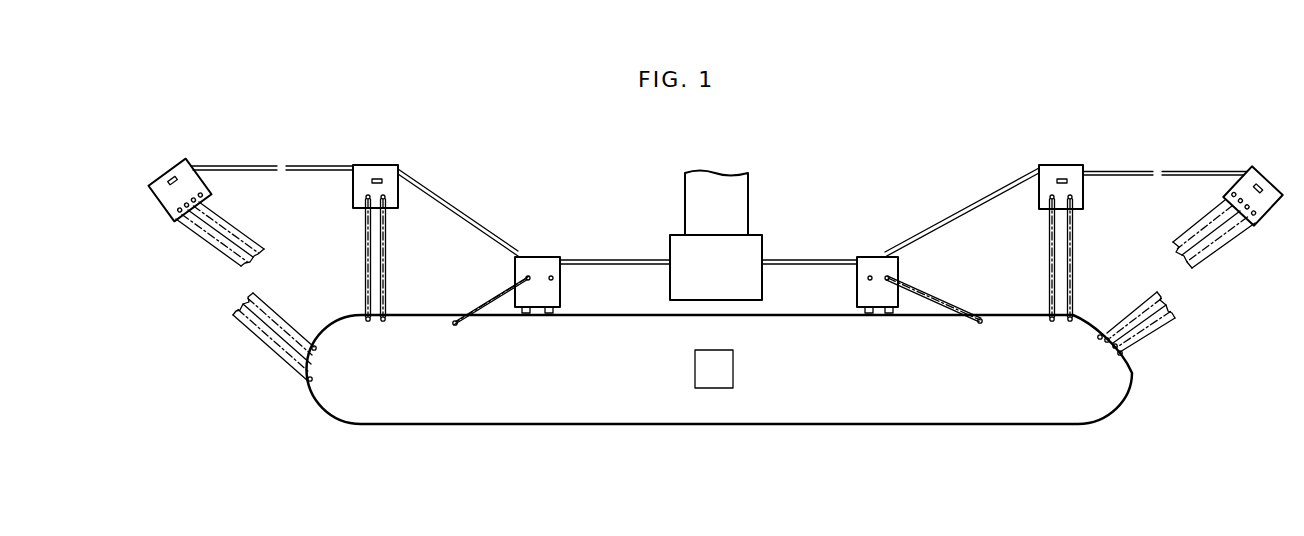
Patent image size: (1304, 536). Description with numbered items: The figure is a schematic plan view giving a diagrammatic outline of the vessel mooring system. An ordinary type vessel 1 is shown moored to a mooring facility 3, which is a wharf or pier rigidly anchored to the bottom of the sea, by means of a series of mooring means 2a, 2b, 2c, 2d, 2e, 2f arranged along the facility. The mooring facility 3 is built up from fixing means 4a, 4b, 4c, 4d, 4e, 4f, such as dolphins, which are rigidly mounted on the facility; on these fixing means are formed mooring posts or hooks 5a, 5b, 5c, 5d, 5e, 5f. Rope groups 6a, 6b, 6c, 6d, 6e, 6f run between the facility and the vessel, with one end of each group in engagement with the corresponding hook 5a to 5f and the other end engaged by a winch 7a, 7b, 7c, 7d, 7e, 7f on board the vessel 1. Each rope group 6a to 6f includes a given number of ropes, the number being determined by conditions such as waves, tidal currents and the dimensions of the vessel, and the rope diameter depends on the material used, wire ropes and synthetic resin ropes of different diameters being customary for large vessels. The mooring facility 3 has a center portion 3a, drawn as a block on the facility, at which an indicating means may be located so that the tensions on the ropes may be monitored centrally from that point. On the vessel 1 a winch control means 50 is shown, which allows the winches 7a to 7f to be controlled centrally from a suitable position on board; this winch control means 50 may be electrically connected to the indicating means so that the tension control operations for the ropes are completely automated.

The vessel 1 is at (648, 424).
The mooring means 2a is at (215, 212).
The mooring means 2b is at (383, 214).
The mooring means 2c is at (533, 287).
The mooring means 2d is at (912, 286).
The mooring means 2e is at (1062, 216).
The mooring means 2f is at (1230, 208).
The mooring facility 3 is at (242, 162).
The center portion of the mooring facility 3a is at (747, 264).
The fixing means 4a is at (204, 183).
The fixing means 4b is at (378, 170).
The fixing means 4c is at (553, 264).
The fixing means 4d is at (878, 263).
The fixing means 4e is at (1050, 175).
The fixing means 4f is at (1260, 178).
The mooring post or hook 5a is at (180, 213).
The mooring post or hook 5b is at (366, 197).
The mooring post or hook 5c is at (528, 276).
The mooring post or hook 5d is at (870, 276).
The mooring post or hook 5e is at (1050, 197).
The mooring post or hook 5f is at (1237, 197).
The rope group 6a is at (258, 345).
The rope group 6b is at (387, 278).
The rope group 6c is at (500, 298).
The rope group 6d is at (940, 305).
The rope group 6e is at (1050, 280).
The rope group 6f is at (1147, 327).
The winch 7a is at (312, 382).
The winch 7b is at (369, 322).
The winch 7c is at (455, 326).
The winch 7d is at (981, 324).
The winch 7e is at (1053, 322).
The winch 7f is at (1122, 355).
The winch control means 50 is at (720, 372).